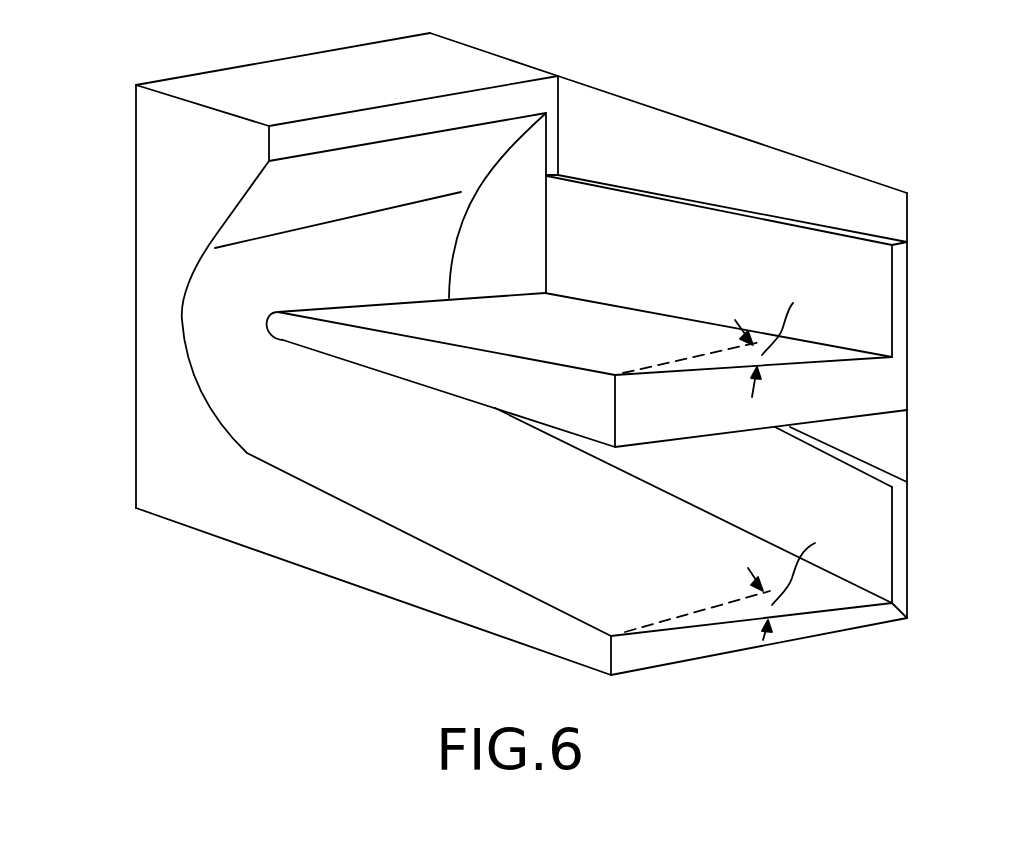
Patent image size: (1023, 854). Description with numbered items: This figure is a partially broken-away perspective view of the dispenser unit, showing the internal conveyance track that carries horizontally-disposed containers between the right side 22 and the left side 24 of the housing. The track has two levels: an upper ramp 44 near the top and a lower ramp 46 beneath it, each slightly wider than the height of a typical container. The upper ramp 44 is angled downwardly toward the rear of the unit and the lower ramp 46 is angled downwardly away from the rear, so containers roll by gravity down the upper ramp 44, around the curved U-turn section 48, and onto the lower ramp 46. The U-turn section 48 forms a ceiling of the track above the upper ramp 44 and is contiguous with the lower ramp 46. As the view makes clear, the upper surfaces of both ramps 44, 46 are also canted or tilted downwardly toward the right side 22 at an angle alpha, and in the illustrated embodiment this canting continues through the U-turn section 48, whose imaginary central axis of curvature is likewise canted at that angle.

The right side 22 is at (900, 435).
The left side 24 is at (142, 418).
The upper ramp 44 is at (590, 347).
The lower ramp 46 is at (528, 529).
The U-turn section 48 is at (364, 275).